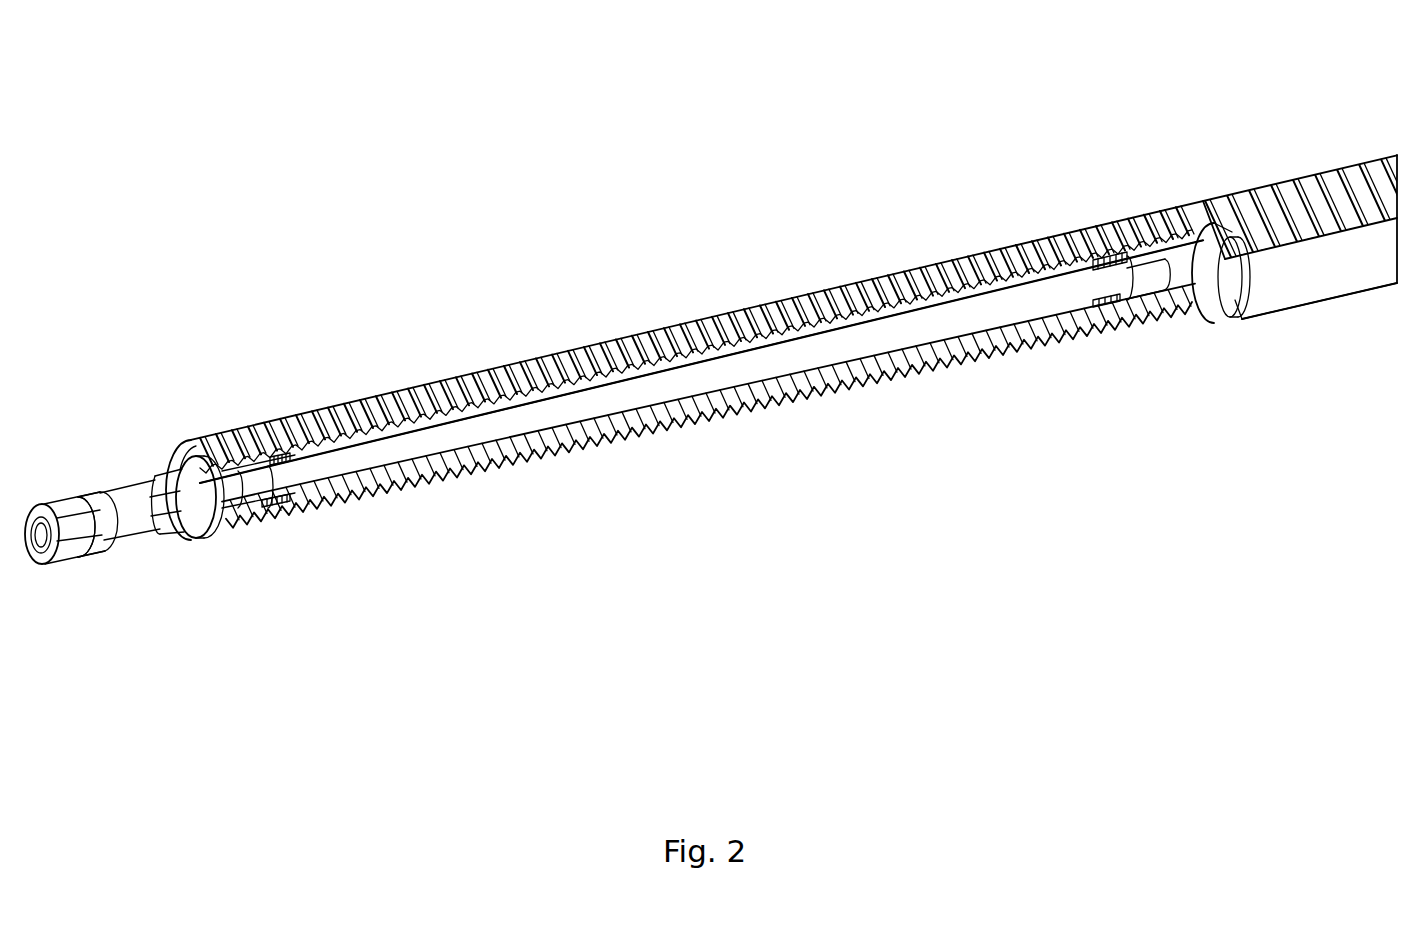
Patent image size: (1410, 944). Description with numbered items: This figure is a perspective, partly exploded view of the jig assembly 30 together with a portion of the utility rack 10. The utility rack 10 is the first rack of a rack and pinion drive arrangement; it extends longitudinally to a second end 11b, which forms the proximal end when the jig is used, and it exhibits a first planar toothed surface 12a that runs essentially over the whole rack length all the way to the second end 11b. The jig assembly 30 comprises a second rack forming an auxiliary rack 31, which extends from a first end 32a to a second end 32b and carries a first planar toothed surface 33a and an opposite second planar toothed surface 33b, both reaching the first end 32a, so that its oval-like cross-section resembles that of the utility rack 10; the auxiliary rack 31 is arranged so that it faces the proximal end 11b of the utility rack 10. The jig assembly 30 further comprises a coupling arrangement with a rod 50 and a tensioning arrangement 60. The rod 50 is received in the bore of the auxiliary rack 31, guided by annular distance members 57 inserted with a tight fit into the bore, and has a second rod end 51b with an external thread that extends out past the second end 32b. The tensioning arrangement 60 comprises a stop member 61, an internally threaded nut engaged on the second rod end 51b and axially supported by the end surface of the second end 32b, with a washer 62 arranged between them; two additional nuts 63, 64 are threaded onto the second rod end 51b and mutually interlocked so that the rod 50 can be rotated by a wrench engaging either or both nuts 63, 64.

The utility rack 10 is at (1362, 152).
The second end 11b is at (1243, 308).
The first planar toothed surface 12a is at (1307, 190).
The jig assembly 30 is at (650, 325).
The auxiliary rack 31 is at (312, 415).
The first end 32a is at (1193, 308).
The second end 32b is at (173, 442).
The first planar toothed surface 33a is at (574, 348).
The second planar toothed surface 33b is at (545, 460).
The rod 50 is at (1003, 340).
The second rod end 51b is at (137, 534).
The annular distance member 57 is at (289, 496).
The tensioning arrangement 60 is at (180, 546).
The stop member 61 is at (152, 480).
The washer 62 is at (167, 463).
The additional nut 63 is at (80, 494).
The additional nut 64 is at (53, 496).